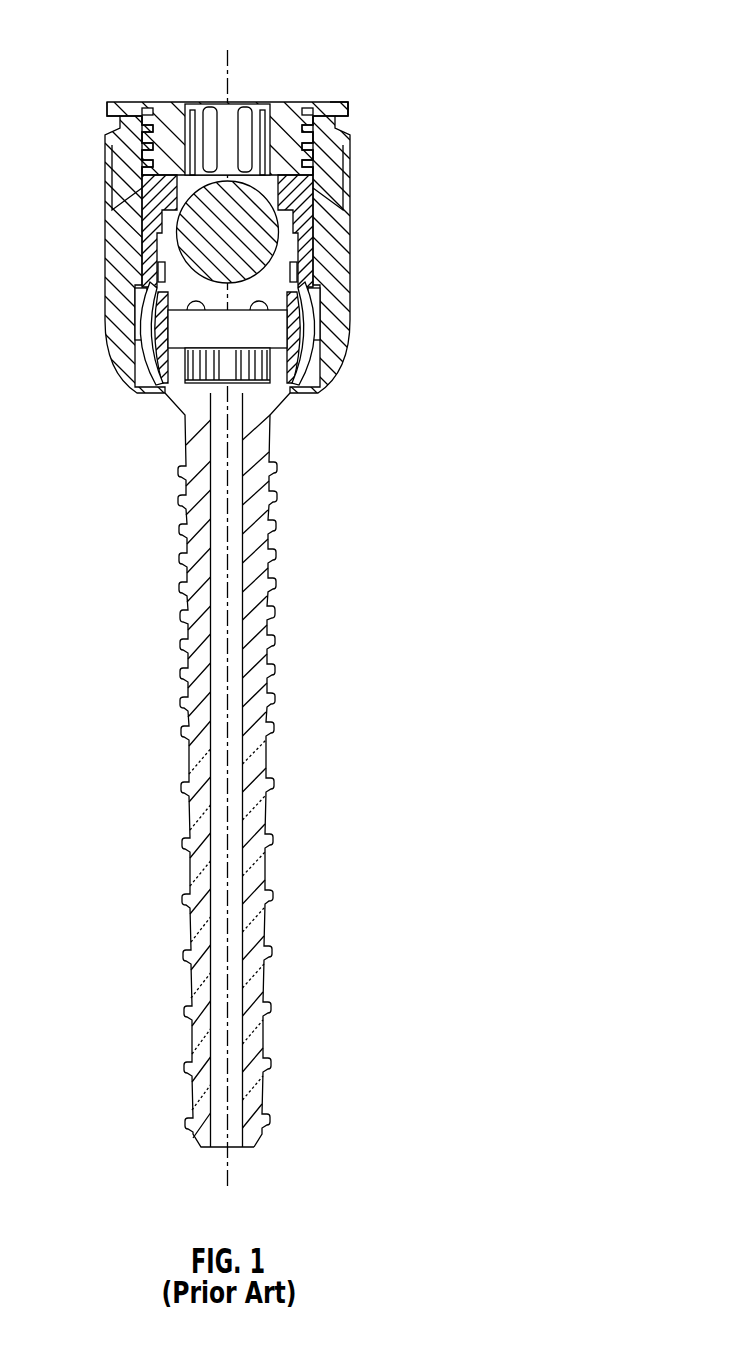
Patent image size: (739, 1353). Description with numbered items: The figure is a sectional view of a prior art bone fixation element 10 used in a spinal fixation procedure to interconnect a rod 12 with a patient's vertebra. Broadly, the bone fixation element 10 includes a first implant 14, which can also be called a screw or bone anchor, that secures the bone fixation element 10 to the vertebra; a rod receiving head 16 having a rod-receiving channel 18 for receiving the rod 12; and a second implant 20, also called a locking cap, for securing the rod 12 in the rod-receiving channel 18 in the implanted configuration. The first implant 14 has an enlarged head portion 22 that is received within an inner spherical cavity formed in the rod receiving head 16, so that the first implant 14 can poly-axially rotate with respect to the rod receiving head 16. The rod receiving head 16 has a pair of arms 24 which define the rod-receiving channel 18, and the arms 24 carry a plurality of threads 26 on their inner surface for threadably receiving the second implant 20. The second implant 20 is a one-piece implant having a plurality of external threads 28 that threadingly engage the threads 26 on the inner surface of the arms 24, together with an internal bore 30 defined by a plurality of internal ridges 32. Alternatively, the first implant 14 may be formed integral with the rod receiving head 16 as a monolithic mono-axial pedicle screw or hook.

The bone fixation element 10 is at (231, 597).
The rod 12 is at (295, 235).
The first implant 14 is at (270, 572).
The rod receiving head 16 is at (105, 312).
The rod-receiving channel 18 is at (115, 230).
The second implant 20 is at (227, 120).
The enlarged head portion 22 is at (160, 372).
The arms 24 is at (107, 113).
The threads 26 is at (312, 118).
The external threads 28 is at (150, 140).
The internal bore 30 is at (232, 78).
The internal ridges 32 is at (208, 103).